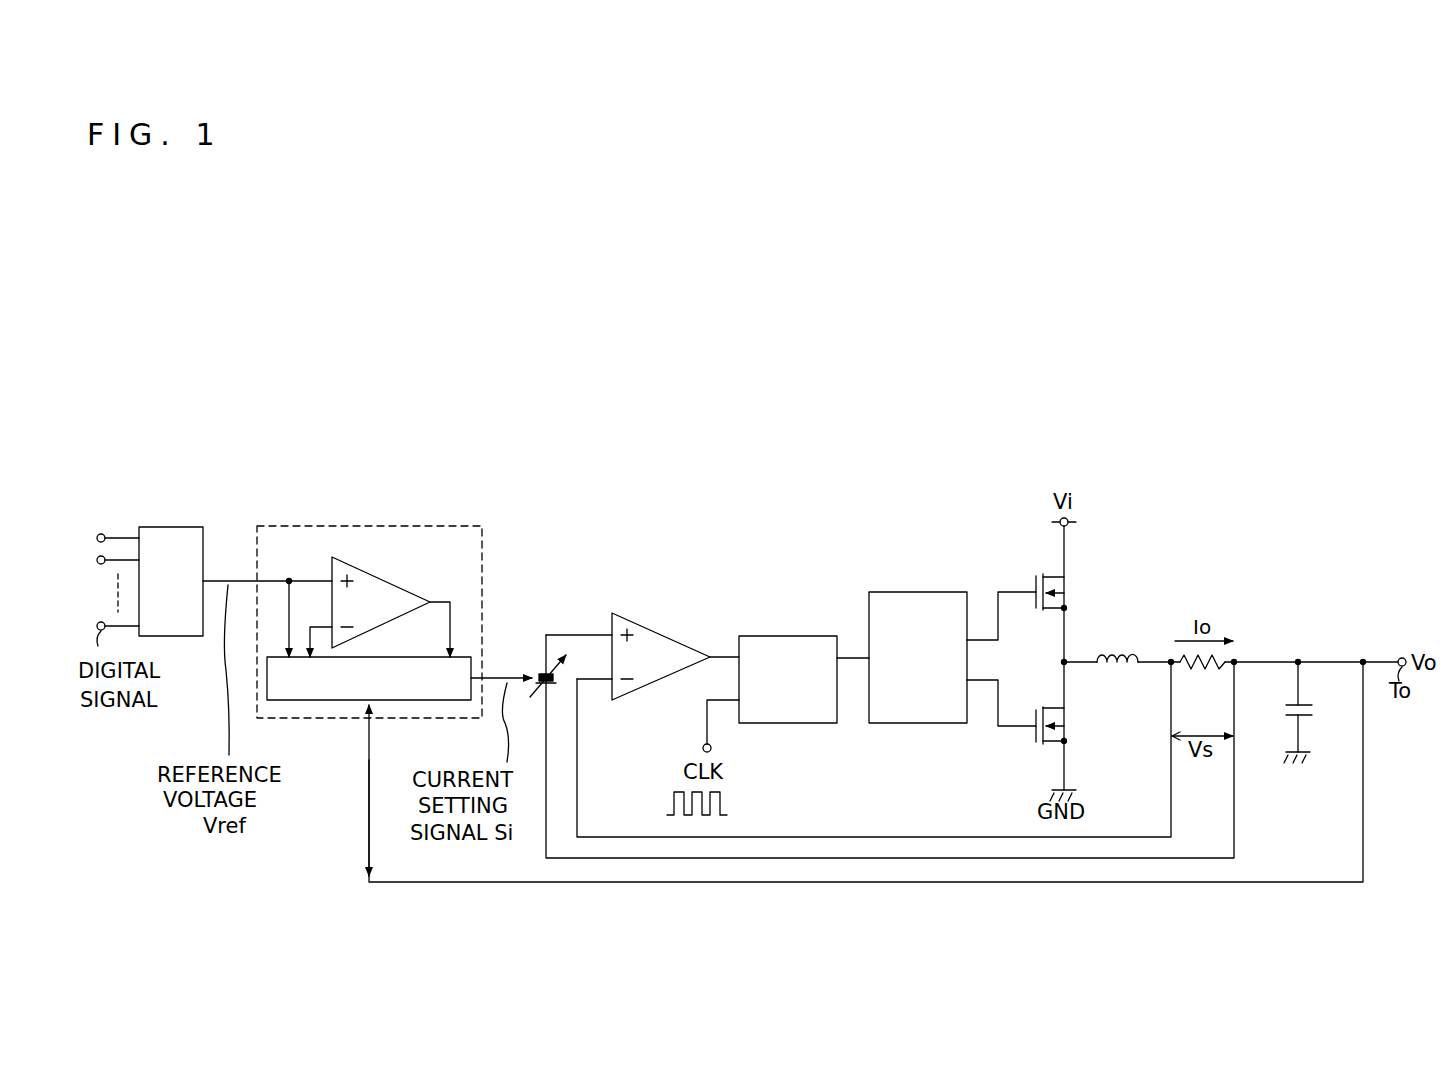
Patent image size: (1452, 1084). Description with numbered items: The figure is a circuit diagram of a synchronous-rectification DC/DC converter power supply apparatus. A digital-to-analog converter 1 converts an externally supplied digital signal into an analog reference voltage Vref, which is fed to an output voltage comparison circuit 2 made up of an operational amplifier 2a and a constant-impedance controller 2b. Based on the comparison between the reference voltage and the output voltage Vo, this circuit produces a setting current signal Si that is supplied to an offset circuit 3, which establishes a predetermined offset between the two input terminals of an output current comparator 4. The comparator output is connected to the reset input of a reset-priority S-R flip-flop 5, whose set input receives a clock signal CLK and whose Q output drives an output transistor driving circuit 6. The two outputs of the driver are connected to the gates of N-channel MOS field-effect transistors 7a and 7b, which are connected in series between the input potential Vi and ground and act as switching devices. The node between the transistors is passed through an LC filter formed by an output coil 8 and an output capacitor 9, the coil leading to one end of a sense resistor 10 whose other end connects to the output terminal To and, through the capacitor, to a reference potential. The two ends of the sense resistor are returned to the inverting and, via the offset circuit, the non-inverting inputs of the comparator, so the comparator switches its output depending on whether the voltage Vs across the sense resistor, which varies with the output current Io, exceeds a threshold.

The digital-to-analog converter 1 is at (170, 527).
The output voltage comparison circuit 2 is at (370, 526).
The operational amplifier 2a is at (376, 585).
The constant-impedance controller 2b is at (400, 657).
The offset circuit 3 is at (543, 672).
The output current comparator 4 is at (656, 630).
The reset-priority S-R flip-flop 5 is at (790, 636).
The output transistor driving circuit 6 is at (918, 592).
The N-channel MOS field-effect transistor 7a is at (1035, 610).
The N-channel MOS field-effect transistor 7b is at (1035, 742).
The output coil 8 is at (1119, 668).
The output capacitor 9 is at (1312, 712).
The sense resistor 10 is at (1202, 671).